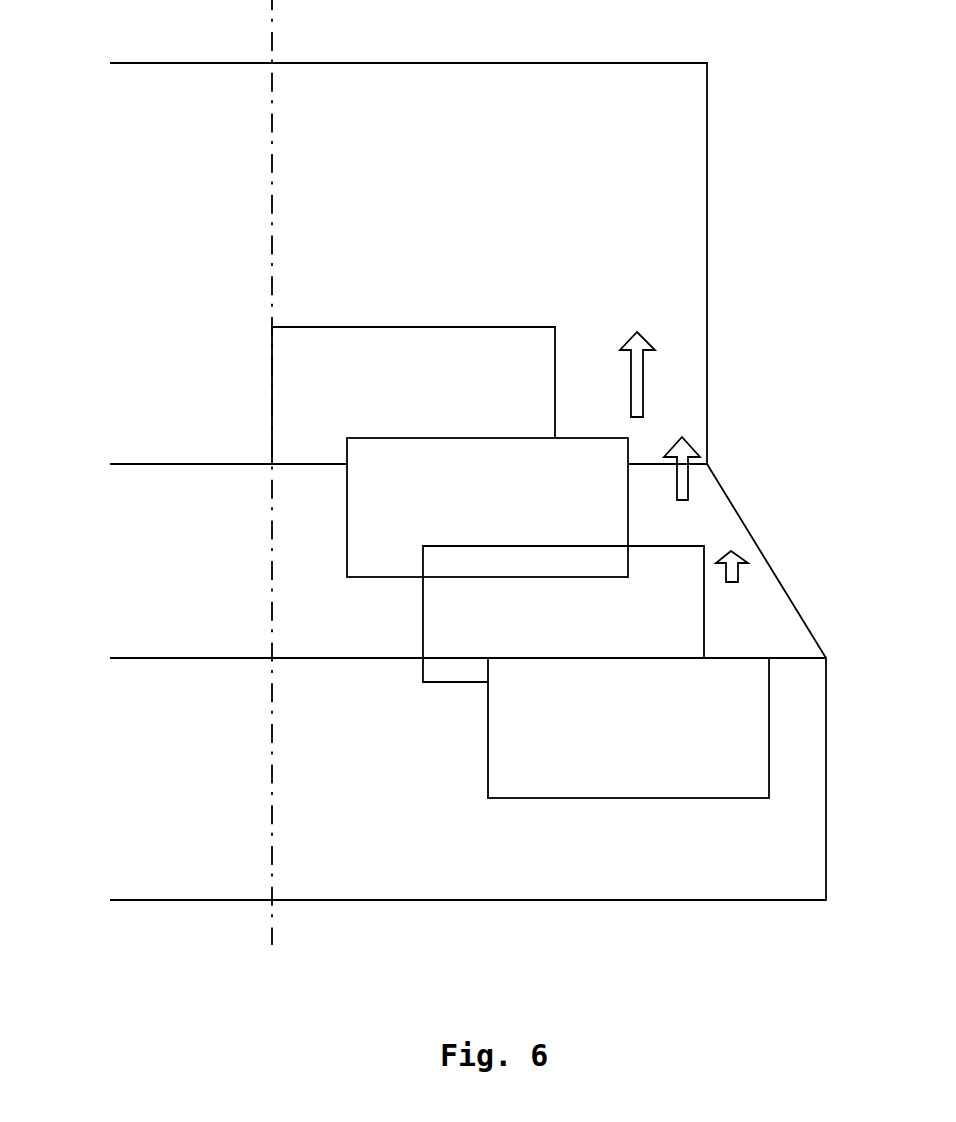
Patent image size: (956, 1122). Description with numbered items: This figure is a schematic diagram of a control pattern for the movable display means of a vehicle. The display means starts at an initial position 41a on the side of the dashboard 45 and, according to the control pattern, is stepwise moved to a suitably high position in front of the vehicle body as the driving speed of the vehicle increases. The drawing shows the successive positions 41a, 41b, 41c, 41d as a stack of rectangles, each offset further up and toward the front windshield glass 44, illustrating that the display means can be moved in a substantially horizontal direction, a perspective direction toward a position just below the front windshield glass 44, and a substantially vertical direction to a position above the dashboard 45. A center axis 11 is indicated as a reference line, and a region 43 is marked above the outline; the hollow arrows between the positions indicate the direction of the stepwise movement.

The center axis 11 is at (272, 48).
The flow path 43 is at (612, 30).
The front windshield glass 44 is at (610, 255).
The dashboard 45 is at (180, 797).
The initial position 41a is at (500, 710).
The second plate 41b is at (452, 616).
The third plate 41c is at (362, 496).
The fourth plate 41d is at (326, 375).